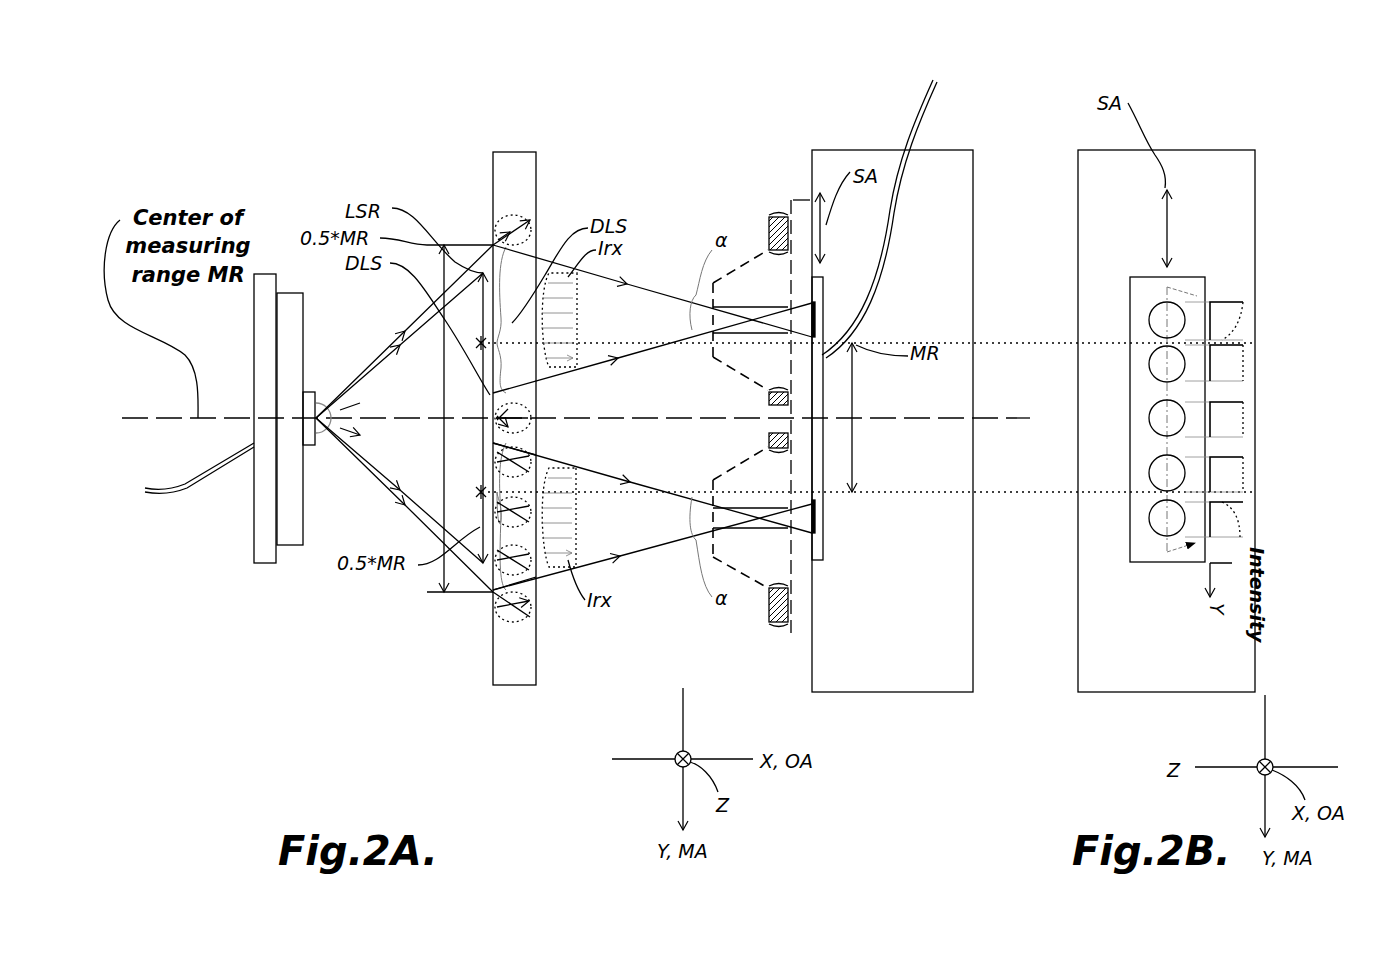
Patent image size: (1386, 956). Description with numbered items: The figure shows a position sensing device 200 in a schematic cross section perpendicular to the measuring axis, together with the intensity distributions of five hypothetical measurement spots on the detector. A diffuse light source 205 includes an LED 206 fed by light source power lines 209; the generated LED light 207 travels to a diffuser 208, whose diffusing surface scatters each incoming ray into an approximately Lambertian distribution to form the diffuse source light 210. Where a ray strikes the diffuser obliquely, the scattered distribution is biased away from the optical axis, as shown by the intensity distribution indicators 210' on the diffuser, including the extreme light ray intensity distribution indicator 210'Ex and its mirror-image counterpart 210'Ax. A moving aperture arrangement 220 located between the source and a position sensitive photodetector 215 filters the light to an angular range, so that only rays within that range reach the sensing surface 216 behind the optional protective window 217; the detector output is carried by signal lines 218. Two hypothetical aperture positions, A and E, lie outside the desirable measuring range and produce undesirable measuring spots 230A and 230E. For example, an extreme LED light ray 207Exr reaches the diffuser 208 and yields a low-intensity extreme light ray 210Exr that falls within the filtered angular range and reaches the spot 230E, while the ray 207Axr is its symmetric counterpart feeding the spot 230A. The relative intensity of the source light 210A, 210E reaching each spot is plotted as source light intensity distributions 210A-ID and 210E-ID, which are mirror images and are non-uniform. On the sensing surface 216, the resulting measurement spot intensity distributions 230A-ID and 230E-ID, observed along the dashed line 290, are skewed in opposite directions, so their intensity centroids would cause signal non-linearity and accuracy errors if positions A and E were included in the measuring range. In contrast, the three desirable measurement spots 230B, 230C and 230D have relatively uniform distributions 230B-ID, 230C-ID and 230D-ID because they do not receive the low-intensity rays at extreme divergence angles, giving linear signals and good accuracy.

In FIG. 2A, the position sensing device 200 is at (978, 85).
In FIG. 2A, the diffuse light source 205 is at (443, 104).
In FIG. 2A, the light emitting element 206 is at (311, 392).
In FIG. 2A, the generated LED light 207 is at (335, 460).
In FIG. 2A, the light ray to aperture A 207Axr is at (418, 322).
In FIG. 2A, the extreme LED light ray 207Exr is at (432, 520).
In FIG. 2A, the diffuser 208 is at (493, 167).
In FIG. 2A, the light source power lines 209 is at (185, 488).
In FIG. 2A, the diffuse source light 210 is at (623, 148).
In FIG. 2A, the lenslet 210' is at (567, 407).
In FIG. 2A, the lenslet A 210'Ax is at (518, 156).
In FIG. 2A, the extreme light ray intensity distribution indicator 210'Ex is at (576, 567).
In FIG. 2A, the extreme light ray 210Exr is at (542, 592).
In FIG. 2A, the light beam A 210A is at (648, 306).
In FIG. 2A, the light beam E 210E is at (640, 537).
In FIG. 2A, the source light intensity distribution 210A-ID is at (582, 303).
In FIG. 2A, the source light intensity distribution 210E-ID is at (578, 535).
In FIG. 2A, the position sensitive photodetector 215 is at (843, 150).
In FIG. 2B, the position sensitive photodetector 215 is at (1222, 150).
In FIG. 2A, the sensing surface 216 is at (823, 560).
In FIG. 2B, the sensing surface 216 is at (1130, 287).
In FIG. 2A, the protective window 217 is at (793, 637).
In FIG. 2A, the signal lines 218 is at (912, 128).
In FIG. 2A, the moving aperture arrangement 220 is at (740, 394).
In FIG. 2A, the measuring spot 230A is at (823, 316).
In FIG. 2B, the measuring spot 230A is at (1148, 320).
In FIG. 2B, the measurement spot 230B is at (1139, 364).
In FIG. 2B, the measurement spot 230C is at (1140, 418).
In FIG. 2B, the measurement spot 230D is at (1140, 473).
In FIG. 2A, the measuring spot 230E is at (823, 516).
In FIG. 2B, the measuring spot 230E is at (1148, 520).
In FIG. 2B, the measurement spot intensity distribution 230A-ID is at (1272, 321).
In FIG. 2B, the measurement spot intensity distribution 230B-ID is at (1272, 363).
In FIG. 2B, the measurement spot intensity distribution 230C-ID is at (1273, 419).
In FIG. 2B, the measurement spot intensity distribution 230D-ID is at (1274, 474).
In FIG. 2B, the measurement spot intensity distribution 230E-ID is at (1272, 519).
In FIG. 2B, the dashed line 290 is at (1165, 543).